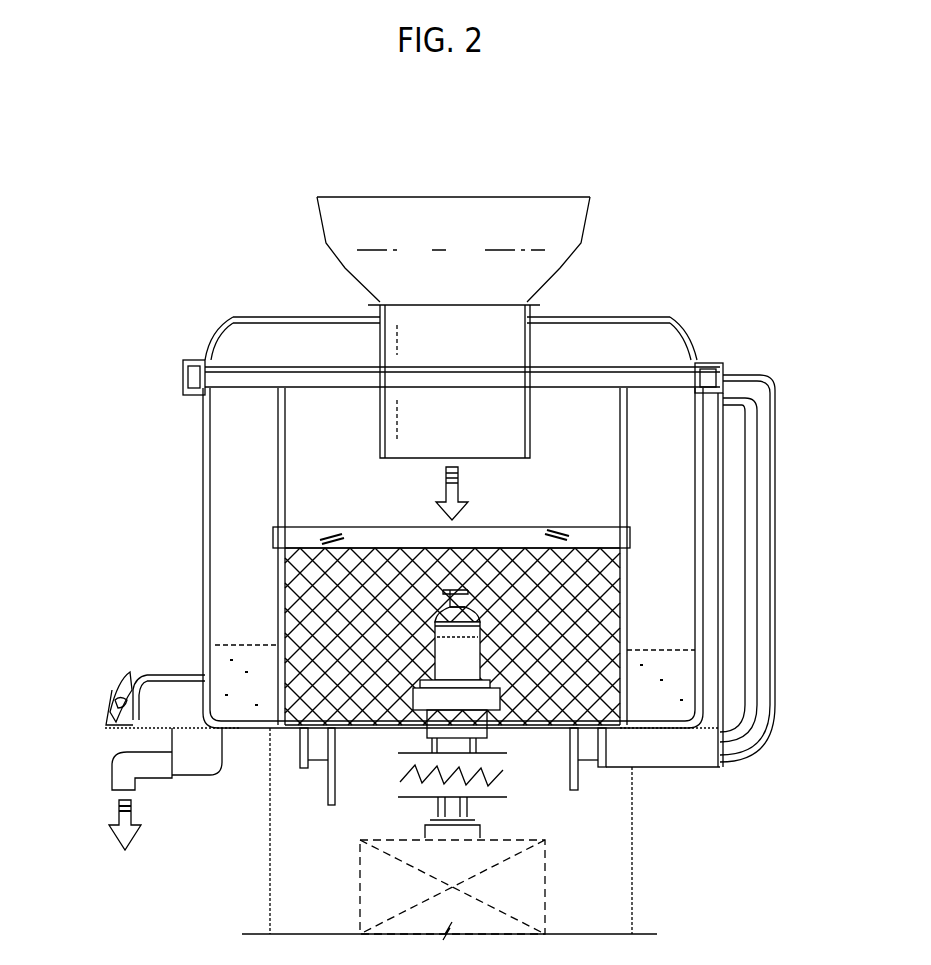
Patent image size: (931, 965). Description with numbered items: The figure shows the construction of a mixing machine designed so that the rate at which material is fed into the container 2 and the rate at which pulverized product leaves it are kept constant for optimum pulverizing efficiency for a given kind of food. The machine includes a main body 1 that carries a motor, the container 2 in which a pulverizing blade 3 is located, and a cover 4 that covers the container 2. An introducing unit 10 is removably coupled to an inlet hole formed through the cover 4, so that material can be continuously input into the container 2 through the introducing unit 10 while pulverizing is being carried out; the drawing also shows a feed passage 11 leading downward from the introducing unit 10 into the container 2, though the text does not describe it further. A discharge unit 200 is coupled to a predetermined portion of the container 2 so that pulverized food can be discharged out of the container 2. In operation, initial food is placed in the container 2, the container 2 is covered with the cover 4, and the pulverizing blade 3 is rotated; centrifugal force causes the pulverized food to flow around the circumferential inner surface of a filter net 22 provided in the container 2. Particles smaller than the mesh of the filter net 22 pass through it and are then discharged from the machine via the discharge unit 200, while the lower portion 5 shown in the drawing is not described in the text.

The main body 1 is at (665, 320).
The introducing unit 10 is at (305, 193).
The feed tube 11 is at (556, 332).
The container 2 is at (627, 662).
The filter net 22 is at (630, 600).
The pulverizing blade 3 is at (703, 497).
The discharge unit 200 is at (128, 658).
The cover 4 is at (545, 865).
The base 5 is at (632, 915).